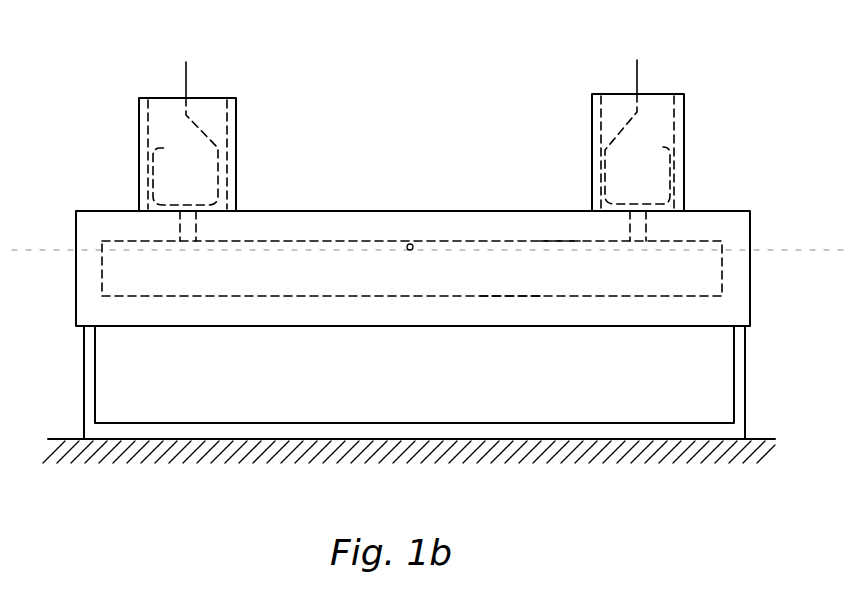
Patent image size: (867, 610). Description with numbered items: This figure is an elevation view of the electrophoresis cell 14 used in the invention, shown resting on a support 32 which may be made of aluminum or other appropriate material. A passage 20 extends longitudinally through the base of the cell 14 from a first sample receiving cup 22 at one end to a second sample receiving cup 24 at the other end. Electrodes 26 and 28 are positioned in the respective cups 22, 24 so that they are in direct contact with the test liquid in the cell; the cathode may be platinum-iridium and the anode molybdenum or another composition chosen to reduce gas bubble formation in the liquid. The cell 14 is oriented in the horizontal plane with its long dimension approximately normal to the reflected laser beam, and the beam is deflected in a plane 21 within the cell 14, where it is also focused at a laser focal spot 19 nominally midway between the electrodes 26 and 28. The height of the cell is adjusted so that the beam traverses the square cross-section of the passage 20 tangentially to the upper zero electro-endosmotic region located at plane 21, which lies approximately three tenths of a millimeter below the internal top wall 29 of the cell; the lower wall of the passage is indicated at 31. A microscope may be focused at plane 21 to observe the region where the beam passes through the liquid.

The electrophoresis cell 14 is at (725, 211).
The laser focal spot 19 is at (413, 245).
The passage 20 is at (295, 273).
The plane 21 is at (783, 247).
The first sample receiving cup 22 is at (139, 160).
The second sample receiving cup 24 is at (684, 148).
The electrode 26 is at (186, 73).
The electrode 28 is at (713, 60).
The internal top wall 29 is at (557, 240).
The passage bottom wall 31 is at (514, 296).
The support 32 is at (782, 370).